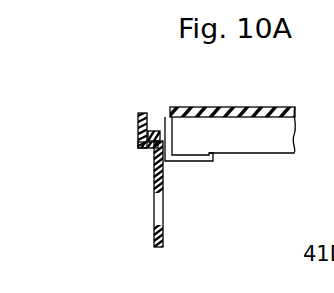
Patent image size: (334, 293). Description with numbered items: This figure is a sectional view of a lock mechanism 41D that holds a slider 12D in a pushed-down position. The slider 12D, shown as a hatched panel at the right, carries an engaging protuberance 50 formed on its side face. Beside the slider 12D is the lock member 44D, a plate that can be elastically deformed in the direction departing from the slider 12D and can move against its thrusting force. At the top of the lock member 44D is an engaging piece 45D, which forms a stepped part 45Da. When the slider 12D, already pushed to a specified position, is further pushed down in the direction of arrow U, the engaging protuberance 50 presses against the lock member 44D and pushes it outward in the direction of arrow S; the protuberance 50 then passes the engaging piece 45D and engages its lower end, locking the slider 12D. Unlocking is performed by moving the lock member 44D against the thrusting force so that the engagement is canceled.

The slider 12D is at (280, 112).
The lock mechanism 41D is at (124, 199).
The lock member 44D is at (163, 231).
The engaging piece 45D is at (138, 124).
The stepped part 45Da is at (140, 146).
The engaging protuberance 50 is at (160, 131).
The direction of arrow U is at (248, 105).
The direction of arrow S is at (156, 173).